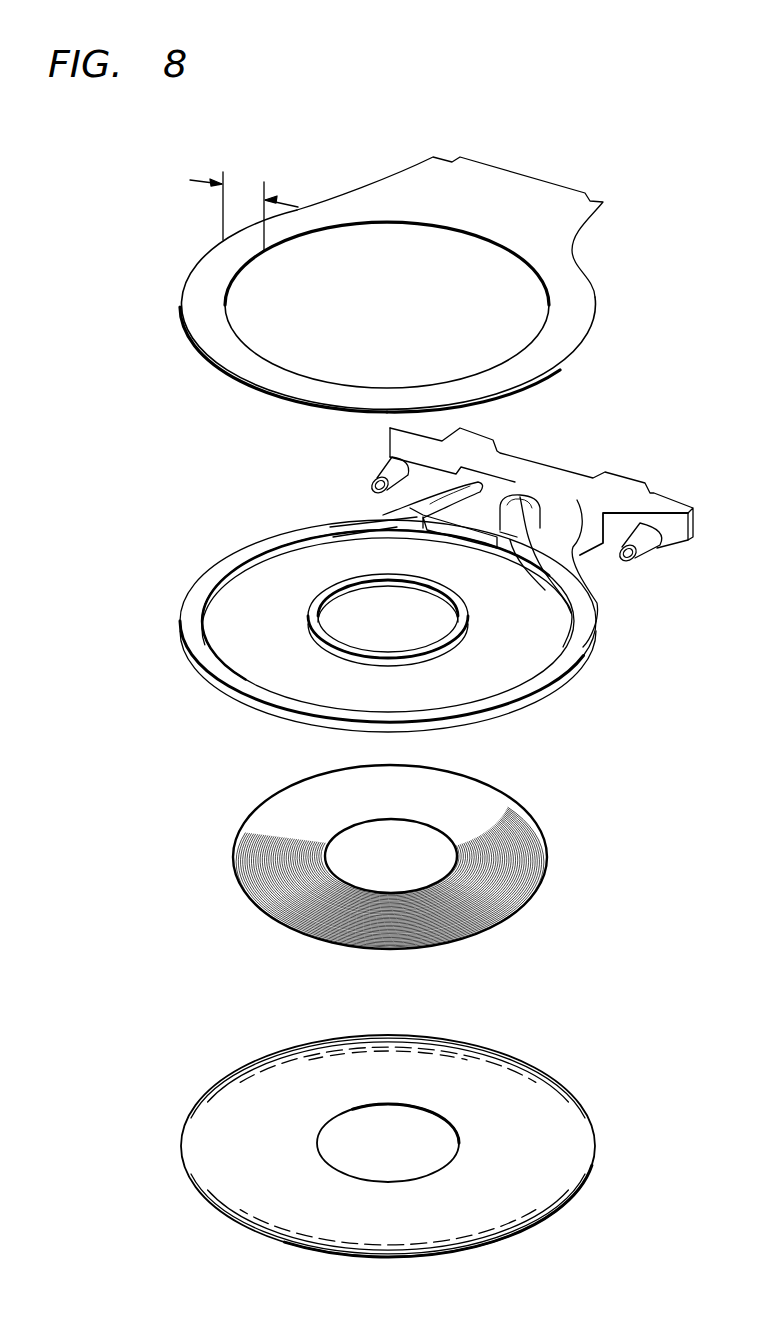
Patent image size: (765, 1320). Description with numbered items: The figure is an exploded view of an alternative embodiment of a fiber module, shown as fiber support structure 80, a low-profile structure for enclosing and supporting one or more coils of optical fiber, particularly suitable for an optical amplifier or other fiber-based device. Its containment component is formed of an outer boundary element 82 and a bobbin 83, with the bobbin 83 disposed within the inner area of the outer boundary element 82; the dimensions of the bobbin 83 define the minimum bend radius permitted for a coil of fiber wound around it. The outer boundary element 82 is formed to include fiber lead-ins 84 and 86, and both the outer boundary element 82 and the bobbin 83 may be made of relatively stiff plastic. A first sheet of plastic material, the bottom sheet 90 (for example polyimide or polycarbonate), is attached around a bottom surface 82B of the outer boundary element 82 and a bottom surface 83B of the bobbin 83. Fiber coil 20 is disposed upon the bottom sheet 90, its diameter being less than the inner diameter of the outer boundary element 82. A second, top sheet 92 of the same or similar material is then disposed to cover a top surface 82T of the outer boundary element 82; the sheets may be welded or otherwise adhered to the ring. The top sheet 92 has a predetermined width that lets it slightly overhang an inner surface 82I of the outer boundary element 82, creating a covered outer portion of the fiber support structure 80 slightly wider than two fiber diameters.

The fiber support structure 80 is at (115, 232).
The top sheet 92 is at (575, 300).
The outer boundary element 82 is at (583, 620).
The top surface of outer boundary element 82T is at (240, 547).
The inner surface of outer boundary element 82I is at (220, 580).
The bottom surface of outer boundary element 82B is at (510, 708).
The bobbin 83 is at (462, 608).
The bottom surface of bobbin 83B is at (350, 657).
The fiber lead-in 84 is at (484, 483).
The fiber lead-in 86 is at (515, 510).
The fiber coil 20 is at (258, 873).
The bottom sheet 90 is at (553, 1100).